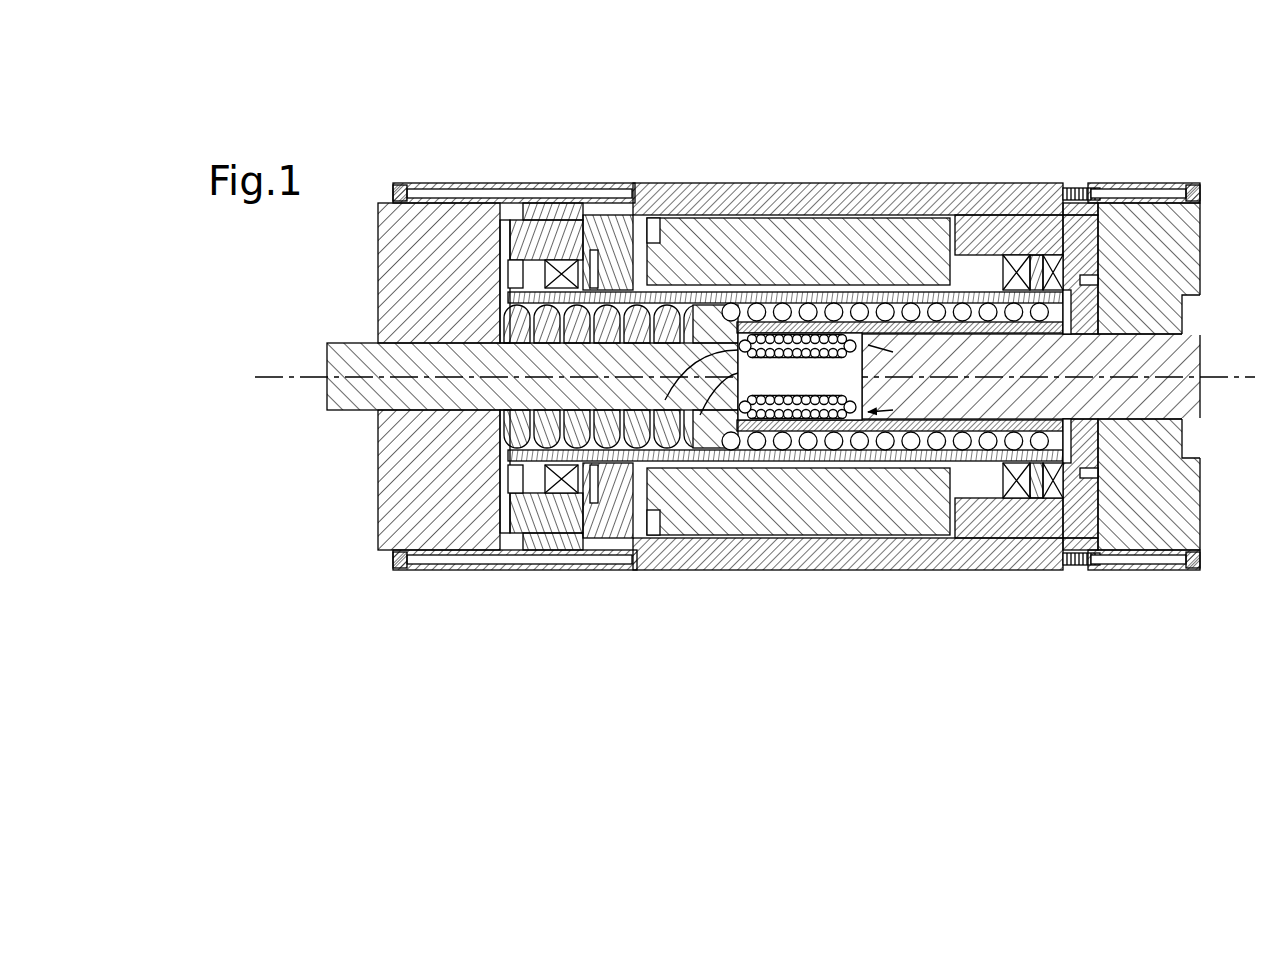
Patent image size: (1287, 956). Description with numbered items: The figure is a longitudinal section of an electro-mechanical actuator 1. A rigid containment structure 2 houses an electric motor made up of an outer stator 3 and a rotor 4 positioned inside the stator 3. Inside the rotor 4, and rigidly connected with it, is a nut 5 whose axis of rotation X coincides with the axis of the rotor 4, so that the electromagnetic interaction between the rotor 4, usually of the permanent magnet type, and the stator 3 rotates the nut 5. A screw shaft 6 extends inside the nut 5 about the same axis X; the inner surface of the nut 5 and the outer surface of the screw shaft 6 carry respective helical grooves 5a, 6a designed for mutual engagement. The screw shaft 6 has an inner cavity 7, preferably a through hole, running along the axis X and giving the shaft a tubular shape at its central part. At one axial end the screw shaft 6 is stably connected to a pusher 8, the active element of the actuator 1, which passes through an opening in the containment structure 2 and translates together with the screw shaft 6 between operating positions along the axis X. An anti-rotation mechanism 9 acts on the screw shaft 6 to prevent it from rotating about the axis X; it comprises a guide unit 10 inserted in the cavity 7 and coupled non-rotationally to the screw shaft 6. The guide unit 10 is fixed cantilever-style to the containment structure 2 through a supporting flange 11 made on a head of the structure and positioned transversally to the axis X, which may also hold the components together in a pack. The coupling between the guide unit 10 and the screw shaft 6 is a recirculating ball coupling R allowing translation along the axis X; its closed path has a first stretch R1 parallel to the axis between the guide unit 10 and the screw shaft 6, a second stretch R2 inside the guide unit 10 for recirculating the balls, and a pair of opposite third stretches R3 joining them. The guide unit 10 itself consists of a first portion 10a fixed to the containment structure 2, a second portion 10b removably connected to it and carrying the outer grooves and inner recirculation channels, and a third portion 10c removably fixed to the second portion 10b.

The actuator 1 is at (440, 142).
The rigid containment structure 2 is at (871, 183).
The outer stator 3 is at (706, 262).
The rotor 4 is at (653, 183).
The nut 5 is at (573, 183).
The helical groove of the nut 5a is at (553, 465).
The screw shaft 6 is at (1027, 500).
The helical groove of the screw shaft 6a is at (803, 292).
The inner cavity 7 is at (670, 575).
The pusher 8 is at (447, 410).
The anti-rotation mechanism 9 is at (838, 430).
The guide unit 10 is at (1050, 250).
The first portion of the guide unit 10a is at (1147, 392).
The second portion of the guide unit 10b is at (805, 322).
The third portion of the guide unit 10c is at (632, 447).
The supporting flange 11 is at (1163, 293).
The recirculating ball coupling R is at (940, 450).
The first stretch R1 is at (775, 658).
The second stretch R2 is at (742, 677).
The third stretches R3 is at (884, 652).
The axis of rotation X is at (313, 377).